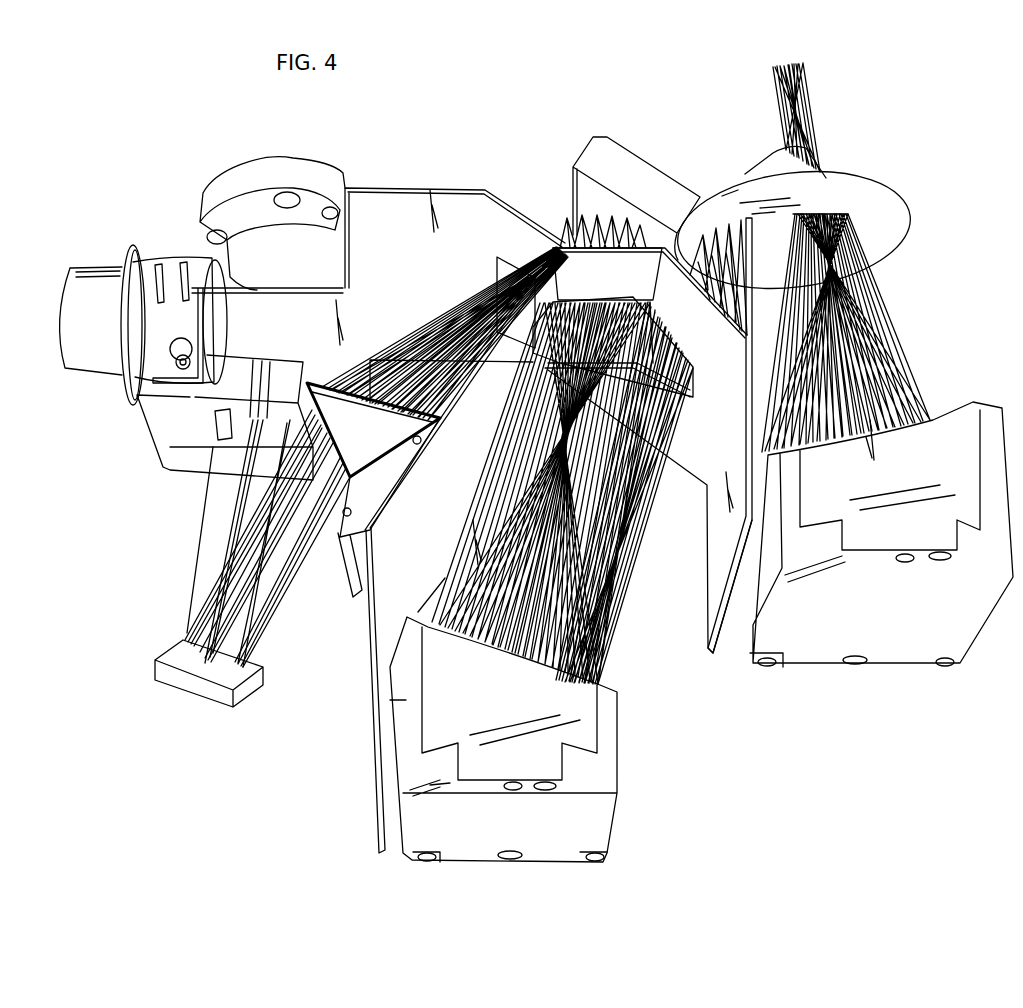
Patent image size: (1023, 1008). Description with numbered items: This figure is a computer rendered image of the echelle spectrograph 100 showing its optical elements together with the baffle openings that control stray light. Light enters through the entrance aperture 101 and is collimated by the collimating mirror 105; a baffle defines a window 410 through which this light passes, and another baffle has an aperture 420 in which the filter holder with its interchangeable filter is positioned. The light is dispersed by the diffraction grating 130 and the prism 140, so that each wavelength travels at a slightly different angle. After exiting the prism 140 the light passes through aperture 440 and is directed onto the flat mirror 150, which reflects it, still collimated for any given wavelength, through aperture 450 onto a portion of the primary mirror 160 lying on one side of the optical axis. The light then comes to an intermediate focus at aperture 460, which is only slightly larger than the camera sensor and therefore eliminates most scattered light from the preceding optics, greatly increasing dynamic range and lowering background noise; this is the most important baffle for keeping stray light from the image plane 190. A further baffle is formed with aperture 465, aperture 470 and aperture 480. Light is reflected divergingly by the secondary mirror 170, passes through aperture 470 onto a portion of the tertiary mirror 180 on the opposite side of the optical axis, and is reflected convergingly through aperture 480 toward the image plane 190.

The echelle spectrograph 100 is at (637, 860).
The entrance aperture 101 is at (112, 336).
The collimating mirror 105 is at (308, 262).
The diffraction grating 130 is at (133, 668).
The prism 140 is at (383, 445).
The flat mirror 150 is at (650, 188).
The primary mirror 160 is at (524, 713).
The secondary mirror 170 is at (748, 174).
The tertiary mirror 180 is at (906, 483).
The image plane 190 is at (811, 66).
The window 410 is at (215, 260).
The aperture 420 is at (220, 432).
The aperture 440 is at (497, 257).
The aperture 450 is at (573, 248).
The aperture 460 is at (652, 395).
The aperture 465 is at (682, 255).
The aperture 470 is at (788, 260).
The aperture 480 is at (815, 226).